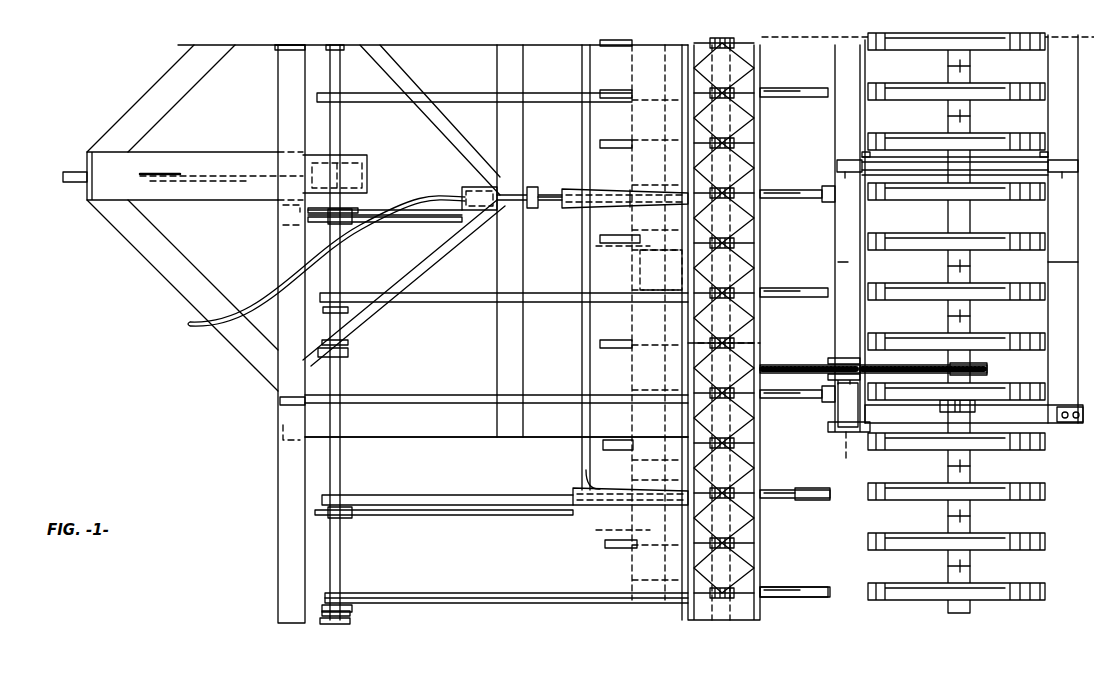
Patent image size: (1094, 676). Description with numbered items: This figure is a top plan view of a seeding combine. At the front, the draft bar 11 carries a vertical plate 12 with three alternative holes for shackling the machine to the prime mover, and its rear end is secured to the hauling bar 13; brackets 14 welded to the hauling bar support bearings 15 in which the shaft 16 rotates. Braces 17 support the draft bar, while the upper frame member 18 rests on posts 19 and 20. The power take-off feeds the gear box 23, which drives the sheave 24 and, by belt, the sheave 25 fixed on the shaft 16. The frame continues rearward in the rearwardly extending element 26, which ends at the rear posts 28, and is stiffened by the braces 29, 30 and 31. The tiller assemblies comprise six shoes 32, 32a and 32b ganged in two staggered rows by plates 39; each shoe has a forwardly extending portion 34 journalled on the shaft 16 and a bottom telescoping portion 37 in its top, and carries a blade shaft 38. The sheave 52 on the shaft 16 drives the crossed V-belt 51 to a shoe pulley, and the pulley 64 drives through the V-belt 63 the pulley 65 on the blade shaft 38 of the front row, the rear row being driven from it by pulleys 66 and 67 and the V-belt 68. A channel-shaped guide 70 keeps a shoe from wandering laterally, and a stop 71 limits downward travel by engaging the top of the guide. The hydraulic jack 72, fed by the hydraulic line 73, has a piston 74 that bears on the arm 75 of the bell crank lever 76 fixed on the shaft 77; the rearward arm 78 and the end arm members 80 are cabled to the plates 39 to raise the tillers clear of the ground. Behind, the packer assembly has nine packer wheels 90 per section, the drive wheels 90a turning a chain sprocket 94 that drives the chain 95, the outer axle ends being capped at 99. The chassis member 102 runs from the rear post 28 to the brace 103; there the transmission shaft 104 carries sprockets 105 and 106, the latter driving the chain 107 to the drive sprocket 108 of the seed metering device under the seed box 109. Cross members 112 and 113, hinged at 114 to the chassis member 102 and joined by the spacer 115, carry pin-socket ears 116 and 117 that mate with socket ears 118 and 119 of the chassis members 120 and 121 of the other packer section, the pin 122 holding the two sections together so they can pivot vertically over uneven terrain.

The draft bar 11 is at (180, 200).
The vertical plate 12 is at (84, 183).
The hauling bar 13 is at (278, 540).
The brackets 14 is at (314, 50).
The bearings 15 is at (340, 50).
The shaft 16 is at (342, 470).
The braces 17 is at (196, 84).
The upper frame member 18 is at (277, 406).
The posts 19 is at (283, 432).
The posts 20 is at (283, 212).
The gear box 23 is at (368, 172).
The sheave 24 is at (283, 230).
The sheave 25 is at (360, 218).
The rearwardly extending element 26 is at (492, 437).
The rear posts 28 is at (838, 427).
The brace 29 is at (448, 122).
The brace 30 is at (524, 128).
The brace 31 is at (440, 250).
The shoes 32 is at (800, 500).
The shoe 32a is at (800, 598).
The shoe 32b is at (605, 545).
The forwardly extending portion 34 is at (500, 594).
The bottom telescoping portion 37 is at (812, 490).
The blade shaft 38 is at (634, 70).
The plates 39 is at (632, 130).
The crossed V-belt 51 is at (450, 303).
The sheave 52 is at (345, 315).
The V-belt 63 is at (420, 224).
The pulley 64 is at (340, 245).
The pulley 65 is at (640, 238).
The pulley 66 is at (585, 240).
The pulley 67 is at (762, 215).
The V-belt 68 is at (670, 250).
The channel-shaped guide 70 is at (826, 188).
The stops 71 is at (830, 202).
The hydraulic jack 72 is at (464, 188).
The hydraulic line 73 is at (208, 328).
The piston 74 is at (540, 190).
The arm 75 is at (556, 206).
The bell crank lever 76 is at (603, 184).
The shaft 77 is at (583, 338).
The arms 78 is at (634, 190).
The arm members 80 is at (582, 490).
The packer wheels 90 is at (1025, 600).
The drive wheels 90a is at (1005, 340).
The chain sprocket 94 is at (988, 370).
The chain 95 is at (898, 368).
The cap 99 is at (950, 614).
The chassis member 102 is at (1048, 423).
The brace 103 is at (918, 440).
The transmission shaft 104 is at (857, 453).
The chain sprocket 105 is at (832, 365).
The chain sprocket 106 is at (838, 358).
The chain 107 is at (778, 365).
The drive sprocket 108 is at (690, 343).
The seed box 109 is at (760, 127).
The cross member 112 is at (836, 270).
The cross member 113 is at (1048, 270).
The hinge 114 is at (1068, 407).
The spacer 115 is at (868, 178).
The pin-socket ear 116 is at (850, 175).
The pin-socket ear 117 is at (1060, 176).
The socket ear 118 is at (843, 160).
The socket ear 119 is at (1068, 160).
The chassis member 120 is at (838, 68).
The chassis member 121 is at (1048, 66).
The pin 122 is at (866, 156).